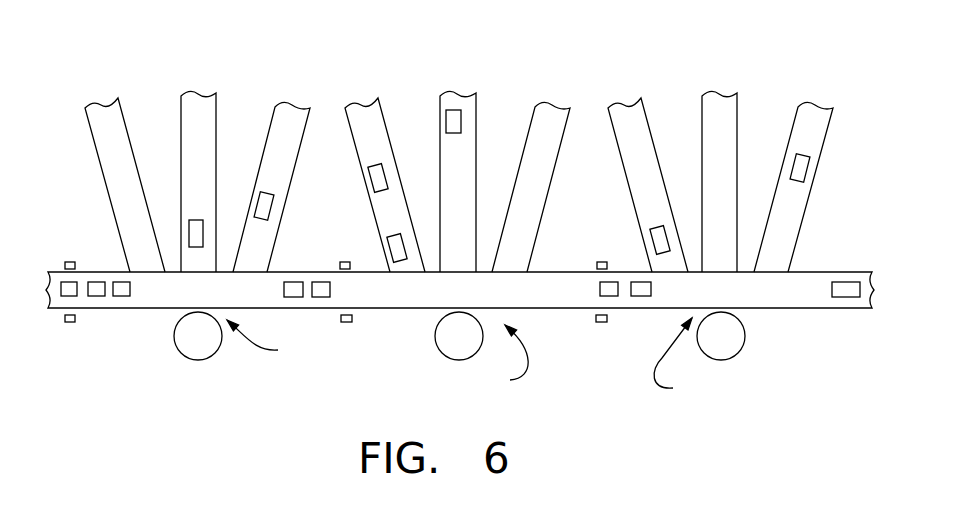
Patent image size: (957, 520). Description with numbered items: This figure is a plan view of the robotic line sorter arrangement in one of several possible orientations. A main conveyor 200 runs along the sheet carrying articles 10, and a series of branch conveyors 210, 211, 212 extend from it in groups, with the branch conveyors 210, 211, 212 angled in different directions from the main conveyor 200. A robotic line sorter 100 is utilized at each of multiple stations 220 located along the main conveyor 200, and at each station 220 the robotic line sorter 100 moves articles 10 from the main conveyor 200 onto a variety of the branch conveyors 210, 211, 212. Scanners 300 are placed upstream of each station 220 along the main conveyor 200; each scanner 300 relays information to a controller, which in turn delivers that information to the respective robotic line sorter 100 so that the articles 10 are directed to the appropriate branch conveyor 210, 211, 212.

The articles 10 is at (372, 183).
The robotic line sorter 100 is at (198, 360).
The main conveyor 200 is at (57, 270).
The branch conveyor 210 is at (90, 127).
The branch conveyor 211 is at (180, 102).
The branch conveyor 212 is at (275, 110).
The stations 220 is at (474, 358).
The scanners 300 is at (70, 323).